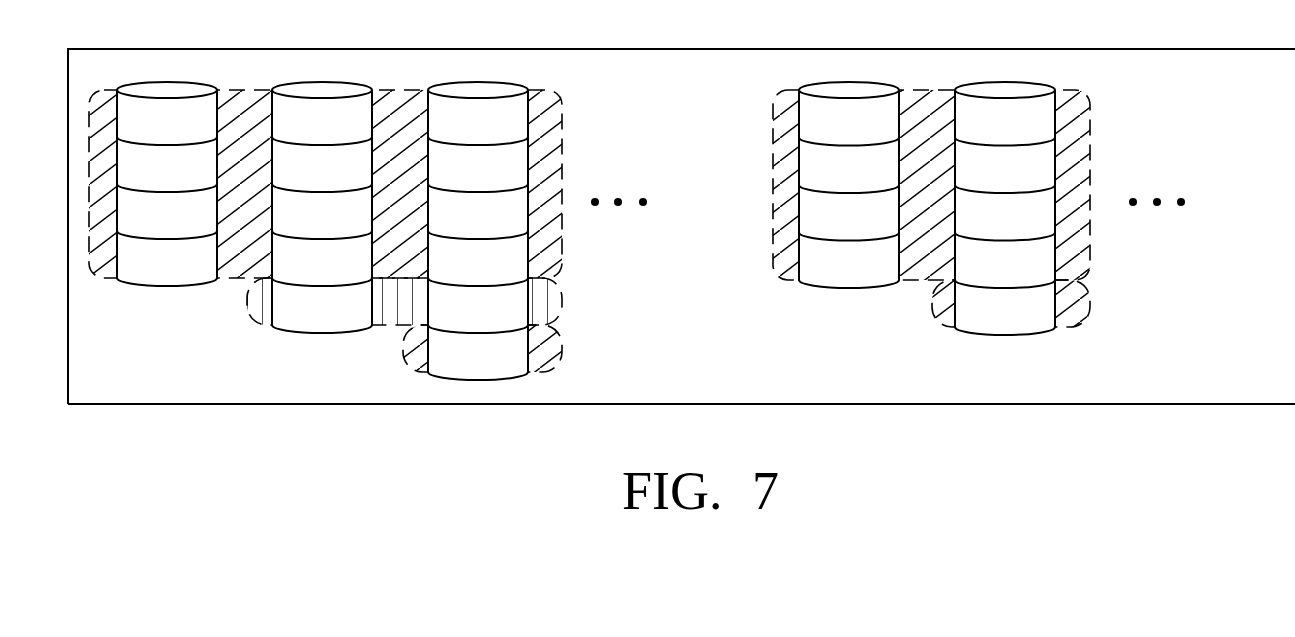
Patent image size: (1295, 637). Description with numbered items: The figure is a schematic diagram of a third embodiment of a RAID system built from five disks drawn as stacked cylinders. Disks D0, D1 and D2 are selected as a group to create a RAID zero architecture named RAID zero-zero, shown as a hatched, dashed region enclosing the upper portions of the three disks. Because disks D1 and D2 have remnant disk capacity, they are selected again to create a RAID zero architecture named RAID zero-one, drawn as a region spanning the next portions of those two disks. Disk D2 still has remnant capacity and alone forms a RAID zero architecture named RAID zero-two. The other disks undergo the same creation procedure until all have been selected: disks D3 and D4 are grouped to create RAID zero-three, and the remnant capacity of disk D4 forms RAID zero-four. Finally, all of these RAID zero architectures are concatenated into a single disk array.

The disk D0 is at (170, 88).
The disk D1 is at (323, 88).
The disk D2 is at (478, 88).
The disk D3 is at (852, 88).
The disk D4 is at (1005, 88).